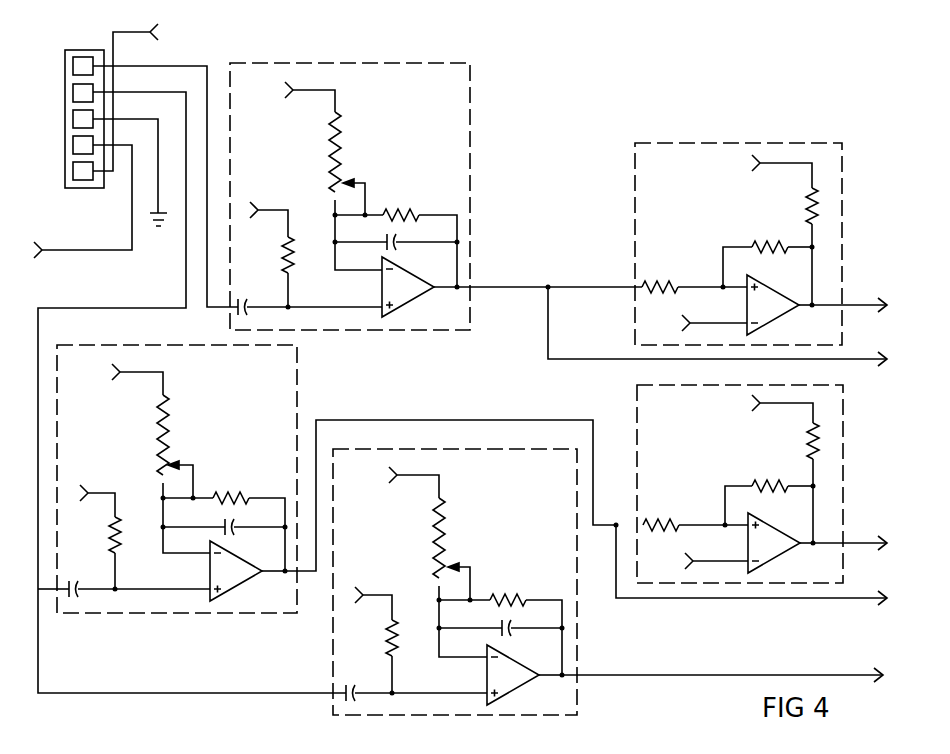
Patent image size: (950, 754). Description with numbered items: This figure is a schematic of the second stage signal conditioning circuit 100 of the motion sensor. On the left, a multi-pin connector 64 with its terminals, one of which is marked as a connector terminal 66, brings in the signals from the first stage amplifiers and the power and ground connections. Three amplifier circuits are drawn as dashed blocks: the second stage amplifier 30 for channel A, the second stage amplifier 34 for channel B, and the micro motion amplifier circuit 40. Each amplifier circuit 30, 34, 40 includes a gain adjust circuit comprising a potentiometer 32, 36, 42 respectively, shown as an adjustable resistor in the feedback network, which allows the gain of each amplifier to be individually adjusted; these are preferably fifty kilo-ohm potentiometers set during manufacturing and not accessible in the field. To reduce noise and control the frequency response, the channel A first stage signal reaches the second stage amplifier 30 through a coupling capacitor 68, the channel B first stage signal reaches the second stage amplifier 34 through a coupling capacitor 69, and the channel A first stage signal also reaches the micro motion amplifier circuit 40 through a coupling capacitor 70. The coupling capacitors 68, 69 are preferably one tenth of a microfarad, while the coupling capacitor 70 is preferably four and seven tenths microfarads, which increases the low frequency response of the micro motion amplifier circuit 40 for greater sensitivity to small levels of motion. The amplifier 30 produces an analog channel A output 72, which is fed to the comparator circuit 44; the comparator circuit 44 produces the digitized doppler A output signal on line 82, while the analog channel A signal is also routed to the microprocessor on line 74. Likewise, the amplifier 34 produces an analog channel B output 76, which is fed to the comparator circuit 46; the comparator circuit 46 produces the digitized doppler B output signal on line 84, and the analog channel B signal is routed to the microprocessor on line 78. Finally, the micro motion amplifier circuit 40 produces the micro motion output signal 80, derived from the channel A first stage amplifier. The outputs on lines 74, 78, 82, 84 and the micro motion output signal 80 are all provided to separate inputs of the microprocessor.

The second stage amplifier 30 is at (206, 477).
The potentiometer 32 is at (186, 465).
The second stage amplifier 34 is at (386, 184).
The potentiometer 36 is at (362, 183).
The micro motion amplifier circuit 40 is at (417, 582).
The potentiometer 42 is at (468, 567).
The comparator circuit 44 is at (637, 408).
The comparator circuit 46 is at (635, 226).
The connector 64 is at (184, 346).
The connector terminal 66 is at (88, 60).
The coupling capacitor 68 is at (76, 588).
The coupling capacitor 69 is at (246, 305).
The coupling capacitor 70 is at (370, 644).
The analog channel A output 72 is at (375, 420).
The analog channel A output signal line 74 is at (848, 598).
The analog channel B output 76 is at (527, 287).
The analog channel B output signal line 78 is at (865, 359).
The micro motion output signal 80 is at (827, 672).
The doppler A output signal line 82 is at (864, 542).
The doppler B output signal line 84 is at (868, 300).
The signal conditioning circuit 100 is at (593, 128).